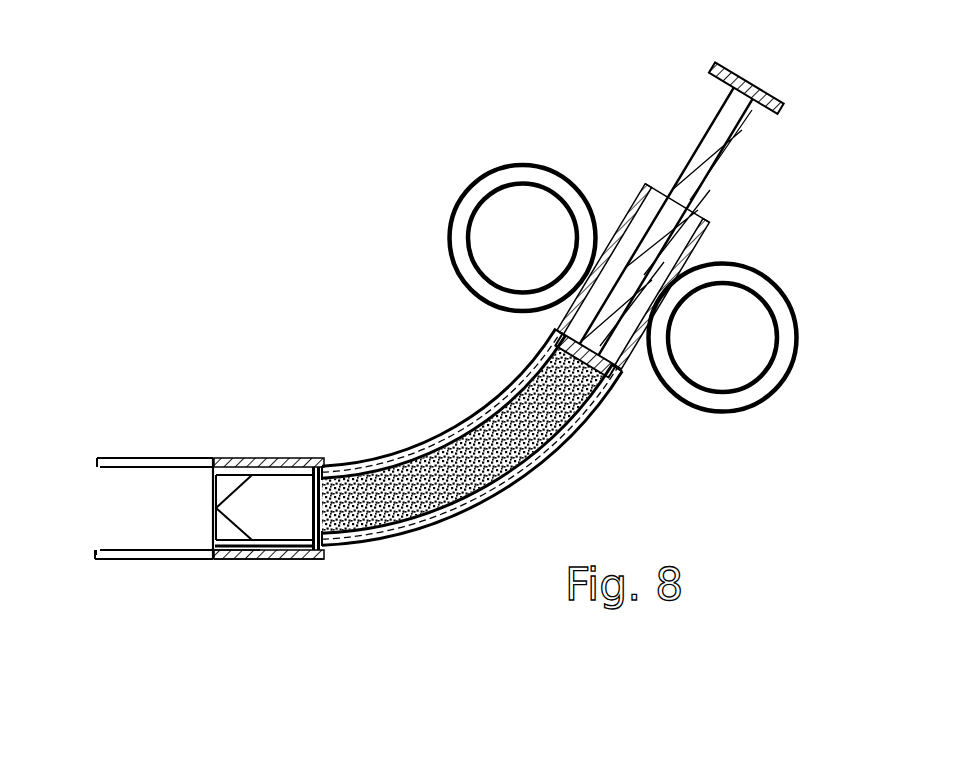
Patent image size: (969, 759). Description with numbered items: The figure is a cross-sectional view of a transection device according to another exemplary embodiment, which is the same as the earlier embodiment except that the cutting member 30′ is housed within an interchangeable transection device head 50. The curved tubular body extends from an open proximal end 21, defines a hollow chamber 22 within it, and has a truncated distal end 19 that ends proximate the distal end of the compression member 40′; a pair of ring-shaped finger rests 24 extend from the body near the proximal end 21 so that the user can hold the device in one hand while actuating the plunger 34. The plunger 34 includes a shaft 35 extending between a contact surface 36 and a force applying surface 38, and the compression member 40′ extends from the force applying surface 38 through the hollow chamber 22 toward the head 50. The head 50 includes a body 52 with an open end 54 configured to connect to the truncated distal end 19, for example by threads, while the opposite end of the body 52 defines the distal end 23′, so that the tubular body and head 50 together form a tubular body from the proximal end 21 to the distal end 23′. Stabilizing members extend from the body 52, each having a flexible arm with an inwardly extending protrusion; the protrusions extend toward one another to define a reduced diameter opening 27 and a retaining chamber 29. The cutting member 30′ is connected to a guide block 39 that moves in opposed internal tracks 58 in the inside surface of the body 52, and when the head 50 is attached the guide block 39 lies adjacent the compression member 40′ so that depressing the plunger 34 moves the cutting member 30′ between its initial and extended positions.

The truncated distal end 19 is at (331, 465).
The proximal end 21 is at (681, 208).
The hollow chamber 22 is at (633, 232).
The distal end 23′ is at (213, 488).
The finger rests 24 is at (494, 184).
The reduced diameter opening 27 is at (104, 507).
The retaining chamber 29 is at (152, 500).
The cutting member 30′ is at (286, 488).
The plunger 34 is at (742, 147).
The shaft 35 is at (696, 156).
The contact surface 36 is at (746, 76).
The force applying surface 38 is at (622, 390).
The guide block 39 is at (322, 456).
The compression member 40′ is at (430, 518).
The interchangeable transection device head 50 is at (252, 570).
The body 52 is at (230, 561).
The open end 54 is at (332, 552).
The internal tracks 58 is at (234, 460).